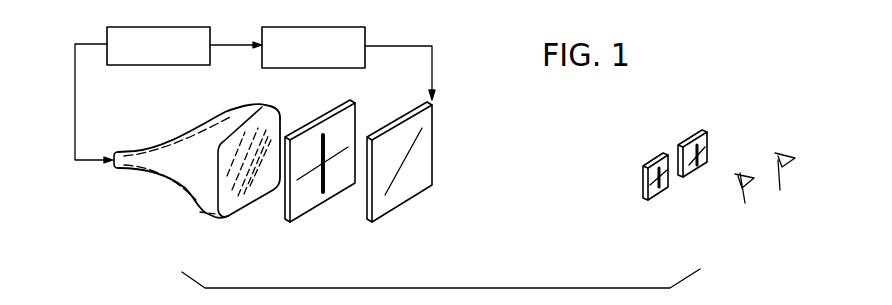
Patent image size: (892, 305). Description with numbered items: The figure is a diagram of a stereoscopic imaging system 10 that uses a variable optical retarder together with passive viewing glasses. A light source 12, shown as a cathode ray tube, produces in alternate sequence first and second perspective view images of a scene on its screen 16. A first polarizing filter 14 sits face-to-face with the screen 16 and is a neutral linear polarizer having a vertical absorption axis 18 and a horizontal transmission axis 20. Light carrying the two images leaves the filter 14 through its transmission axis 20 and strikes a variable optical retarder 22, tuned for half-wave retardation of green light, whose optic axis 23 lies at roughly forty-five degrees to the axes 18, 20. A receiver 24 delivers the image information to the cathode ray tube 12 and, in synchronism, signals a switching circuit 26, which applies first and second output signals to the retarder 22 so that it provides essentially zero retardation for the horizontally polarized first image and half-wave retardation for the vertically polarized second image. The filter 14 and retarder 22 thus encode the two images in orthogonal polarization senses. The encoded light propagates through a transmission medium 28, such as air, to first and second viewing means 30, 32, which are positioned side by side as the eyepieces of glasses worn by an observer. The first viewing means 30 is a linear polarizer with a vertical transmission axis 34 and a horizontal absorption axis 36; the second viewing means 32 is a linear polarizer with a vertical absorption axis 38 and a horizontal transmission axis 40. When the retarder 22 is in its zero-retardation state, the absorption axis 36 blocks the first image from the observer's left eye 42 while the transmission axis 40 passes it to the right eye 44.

The stereoscopic imaging system 10 is at (213, 187).
The light source 12 is at (167, 157).
The first polarizing filter 14 is at (317, 170).
The screen 16 is at (273, 135).
The vertical absorption axis 18 is at (325, 134).
The horizontal transmission axis 20 is at (338, 155).
The variable optical retarder 22 is at (422, 164).
The optic axis 23 is at (401, 167).
The receiver 24 is at (107, 30).
The switching circuit 26 is at (365, 36).
The transmission medium 28 is at (541, 175).
The first viewing means 30 is at (647, 179).
The second viewing means 32 is at (700, 152).
The vertical transmission axis 34 is at (652, 170).
The horizontal absorption axis 36 is at (660, 186).
The absorption axis 38 is at (690, 150).
The transmission axis 40 is at (698, 166).
The left eye 42 is at (745, 202).
The right eye 44 is at (782, 183).